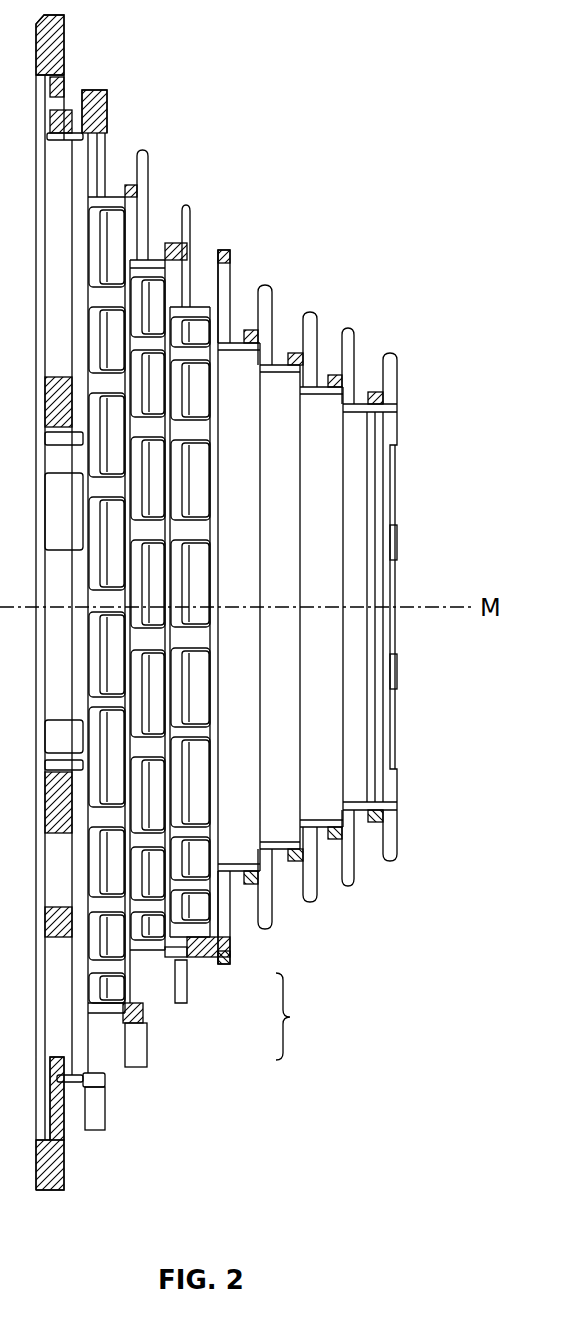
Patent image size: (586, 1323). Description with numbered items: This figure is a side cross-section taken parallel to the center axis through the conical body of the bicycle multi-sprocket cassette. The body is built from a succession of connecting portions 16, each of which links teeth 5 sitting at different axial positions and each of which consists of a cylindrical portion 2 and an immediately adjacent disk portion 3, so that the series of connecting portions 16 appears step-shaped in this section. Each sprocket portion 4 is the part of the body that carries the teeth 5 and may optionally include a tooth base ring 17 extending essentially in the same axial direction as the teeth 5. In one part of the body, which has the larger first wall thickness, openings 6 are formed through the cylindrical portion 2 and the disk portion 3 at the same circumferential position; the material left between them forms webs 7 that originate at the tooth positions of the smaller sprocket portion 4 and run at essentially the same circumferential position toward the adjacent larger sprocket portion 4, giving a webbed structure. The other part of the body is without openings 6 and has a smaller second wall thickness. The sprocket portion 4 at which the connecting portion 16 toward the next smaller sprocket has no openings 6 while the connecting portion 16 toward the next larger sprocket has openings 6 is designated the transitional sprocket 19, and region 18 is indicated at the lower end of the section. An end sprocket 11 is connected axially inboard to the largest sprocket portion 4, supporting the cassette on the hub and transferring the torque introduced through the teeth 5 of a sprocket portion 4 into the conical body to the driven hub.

The cylindrical portion 2 is at (196, 300).
The disk portion 3 is at (370, 385).
The sprocket portion 4 is at (290, 1017).
The teeth 5 is at (230, 933).
The openings 6 is at (110, 263).
The webs 7 is at (192, 432).
The end sprocket 11 is at (53, 40).
The connecting portion 16 is at (467, 295).
The tooth base ring 17 is at (187, 932).
The foot 18 is at (103, 1140).
The transitional sprocket 19 is at (228, 248).